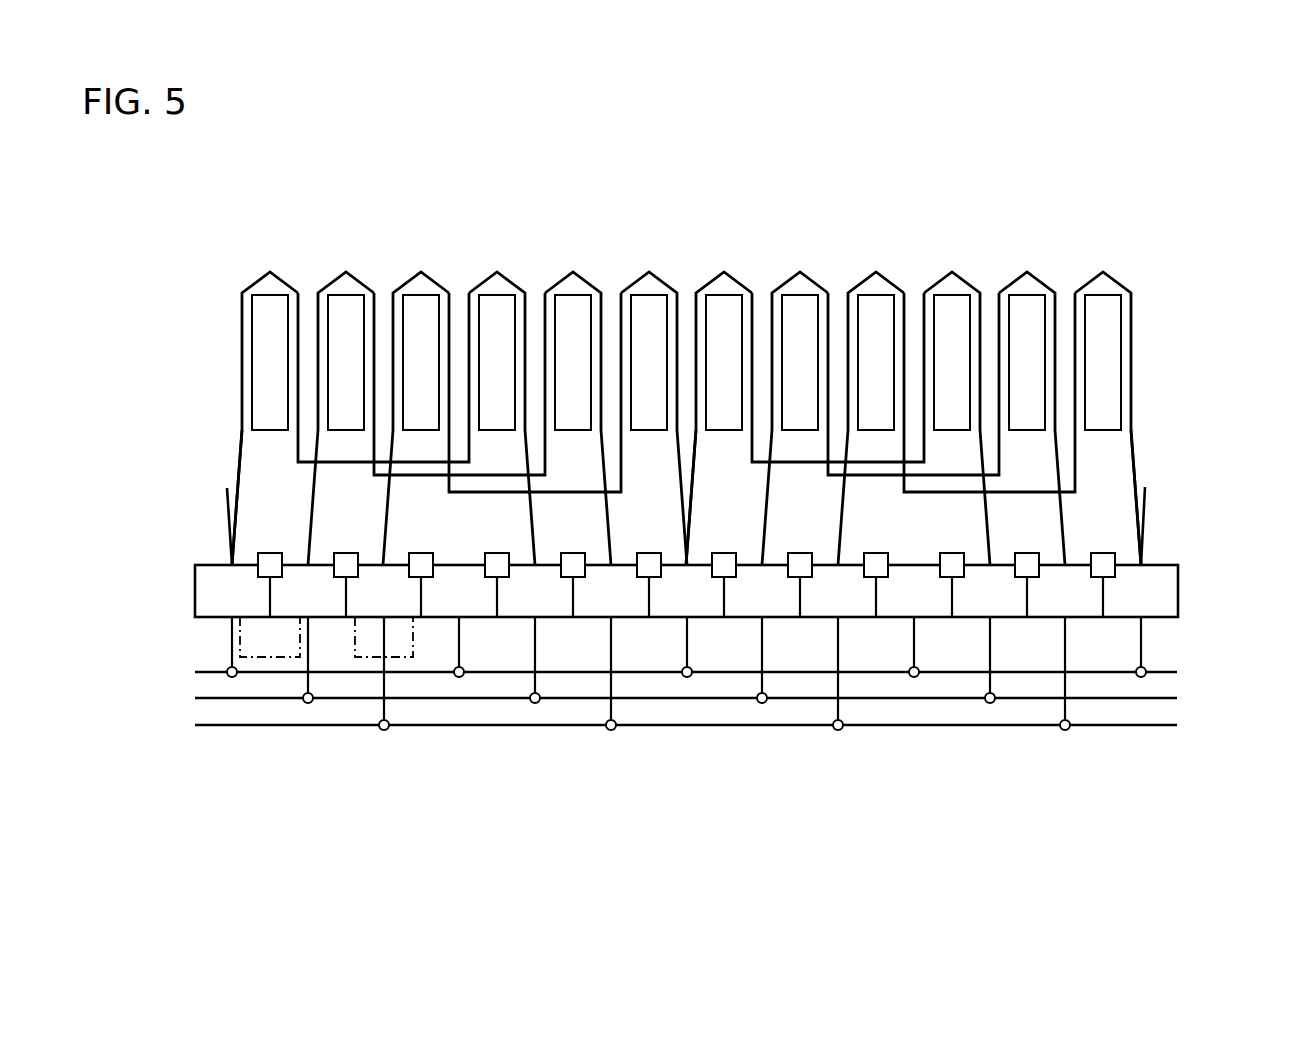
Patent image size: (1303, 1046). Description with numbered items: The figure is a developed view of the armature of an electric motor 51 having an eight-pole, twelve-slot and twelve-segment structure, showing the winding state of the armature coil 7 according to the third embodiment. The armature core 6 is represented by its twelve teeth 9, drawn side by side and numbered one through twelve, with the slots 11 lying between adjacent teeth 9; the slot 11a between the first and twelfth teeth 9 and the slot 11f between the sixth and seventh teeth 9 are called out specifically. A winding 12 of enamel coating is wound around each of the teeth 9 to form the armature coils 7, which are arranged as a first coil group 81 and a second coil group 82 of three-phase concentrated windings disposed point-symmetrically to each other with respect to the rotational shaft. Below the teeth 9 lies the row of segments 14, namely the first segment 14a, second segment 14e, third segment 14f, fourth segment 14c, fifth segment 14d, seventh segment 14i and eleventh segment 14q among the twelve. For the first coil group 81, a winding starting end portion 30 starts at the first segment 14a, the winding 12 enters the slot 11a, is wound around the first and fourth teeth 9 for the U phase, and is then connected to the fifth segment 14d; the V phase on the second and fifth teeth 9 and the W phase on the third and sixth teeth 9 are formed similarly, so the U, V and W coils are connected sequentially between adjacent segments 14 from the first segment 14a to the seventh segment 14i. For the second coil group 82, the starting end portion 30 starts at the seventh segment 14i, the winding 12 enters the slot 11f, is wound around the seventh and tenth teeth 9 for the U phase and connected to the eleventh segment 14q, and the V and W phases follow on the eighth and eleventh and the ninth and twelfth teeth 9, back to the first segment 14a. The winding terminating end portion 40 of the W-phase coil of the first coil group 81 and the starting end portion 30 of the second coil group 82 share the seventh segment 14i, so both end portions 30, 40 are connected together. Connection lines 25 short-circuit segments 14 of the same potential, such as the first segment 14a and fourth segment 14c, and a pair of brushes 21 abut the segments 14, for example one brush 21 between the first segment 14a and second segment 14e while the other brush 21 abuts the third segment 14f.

The electric motor 51 is at (1022, 172).
The armature core 6 is at (1160, 385).
The armature coil 7 is at (327, 285).
The teeth 9 is at (1112, 317).
The first coil group 81 is at (465, 256).
The second coil group 82 is at (843, 256).
The slots 11 is at (540, 281).
The slot 11a is at (237, 303).
The slot 11f is at (687, 305).
The winding 12 is at (242, 405).
The winding starting end portion 30 is at (240, 497).
The winding terminating end portion 40 is at (228, 517).
The segments 14 is at (1178, 590).
The first segment 14a is at (213, 612).
The fourth segment 14c is at (482, 617).
The fifth segment 14d is at (558, 617).
The second segment 14e is at (328, 612).
The third segment 14f is at (403, 612).
The seventh segment 14i is at (663, 617).
The eleventh segment 14q is at (965, 617).
The brushes 21 is at (268, 657).
The connection lines 25 is at (1168, 668).